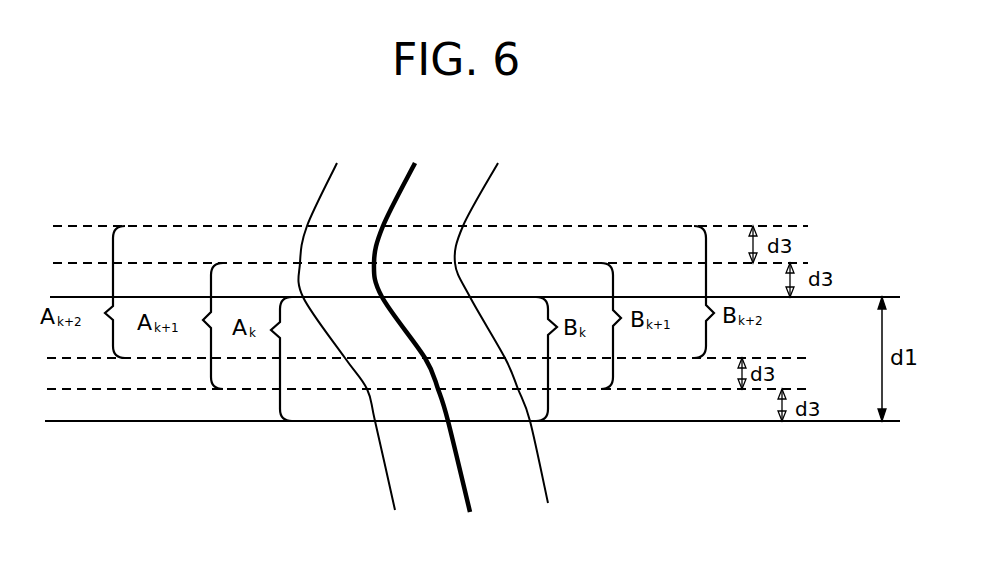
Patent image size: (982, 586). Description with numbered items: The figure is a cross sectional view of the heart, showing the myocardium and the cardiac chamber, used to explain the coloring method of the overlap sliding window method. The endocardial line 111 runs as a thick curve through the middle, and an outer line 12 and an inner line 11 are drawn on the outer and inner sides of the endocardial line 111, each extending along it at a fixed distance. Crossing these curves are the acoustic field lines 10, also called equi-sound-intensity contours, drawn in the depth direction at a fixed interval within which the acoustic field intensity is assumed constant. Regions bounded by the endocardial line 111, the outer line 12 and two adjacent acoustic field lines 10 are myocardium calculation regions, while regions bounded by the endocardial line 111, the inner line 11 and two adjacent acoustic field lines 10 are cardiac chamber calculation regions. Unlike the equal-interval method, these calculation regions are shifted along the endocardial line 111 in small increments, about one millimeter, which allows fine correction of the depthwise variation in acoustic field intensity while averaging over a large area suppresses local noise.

The acoustic field line 10 is at (460, 421).
The inner line 11 is at (509, 351).
The outer line 12 is at (353, 354).
The endocardial line 111 is at (434, 354).